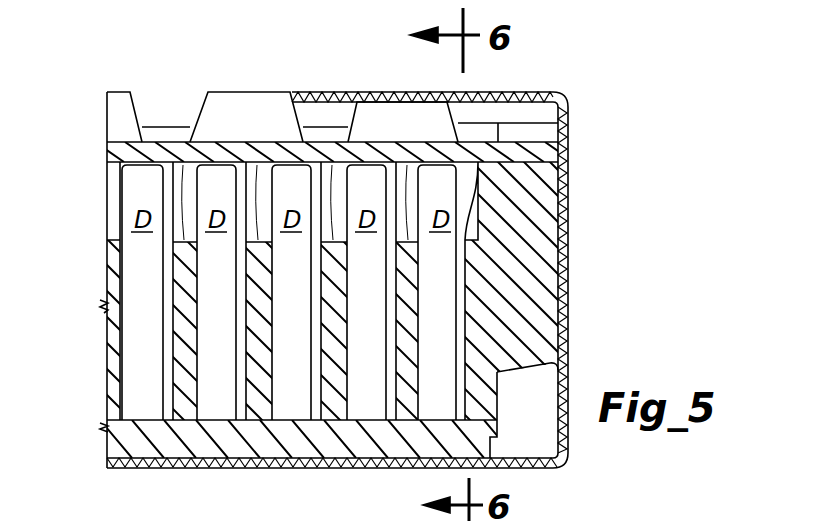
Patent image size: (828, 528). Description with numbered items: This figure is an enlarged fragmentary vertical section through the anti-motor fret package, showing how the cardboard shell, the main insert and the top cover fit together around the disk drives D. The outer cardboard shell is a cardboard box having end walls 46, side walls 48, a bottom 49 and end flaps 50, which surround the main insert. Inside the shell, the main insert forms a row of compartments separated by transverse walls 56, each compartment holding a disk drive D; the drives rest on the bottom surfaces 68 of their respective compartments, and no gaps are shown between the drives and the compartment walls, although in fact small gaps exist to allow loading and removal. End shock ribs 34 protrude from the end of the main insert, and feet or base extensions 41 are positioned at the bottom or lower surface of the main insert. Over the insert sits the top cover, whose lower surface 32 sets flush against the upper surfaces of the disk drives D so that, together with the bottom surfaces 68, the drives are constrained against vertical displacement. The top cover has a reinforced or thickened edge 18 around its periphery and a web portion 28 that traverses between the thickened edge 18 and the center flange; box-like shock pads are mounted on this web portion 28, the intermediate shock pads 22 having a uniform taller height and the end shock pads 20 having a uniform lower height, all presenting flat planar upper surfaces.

The reinforced/thickened edge 18 is at (170, 127).
The end shock pads 20 is at (372, 118).
The intermediate shock pads 22 is at (140, 55).
The web portion 28 is at (140, 142).
The lower surface 32 is at (110, 166).
The end shock ribs 34 is at (530, 329).
The feet/base extensions 41 is at (492, 448).
The end walls 46 is at (570, 153).
The side walls 48 is at (517, 113).
The bottom 49 is at (540, 466).
The end flaps 50 is at (510, 90).
The transverse walls 56 is at (187, 458).
The bottom surfaces 68 is at (145, 418).